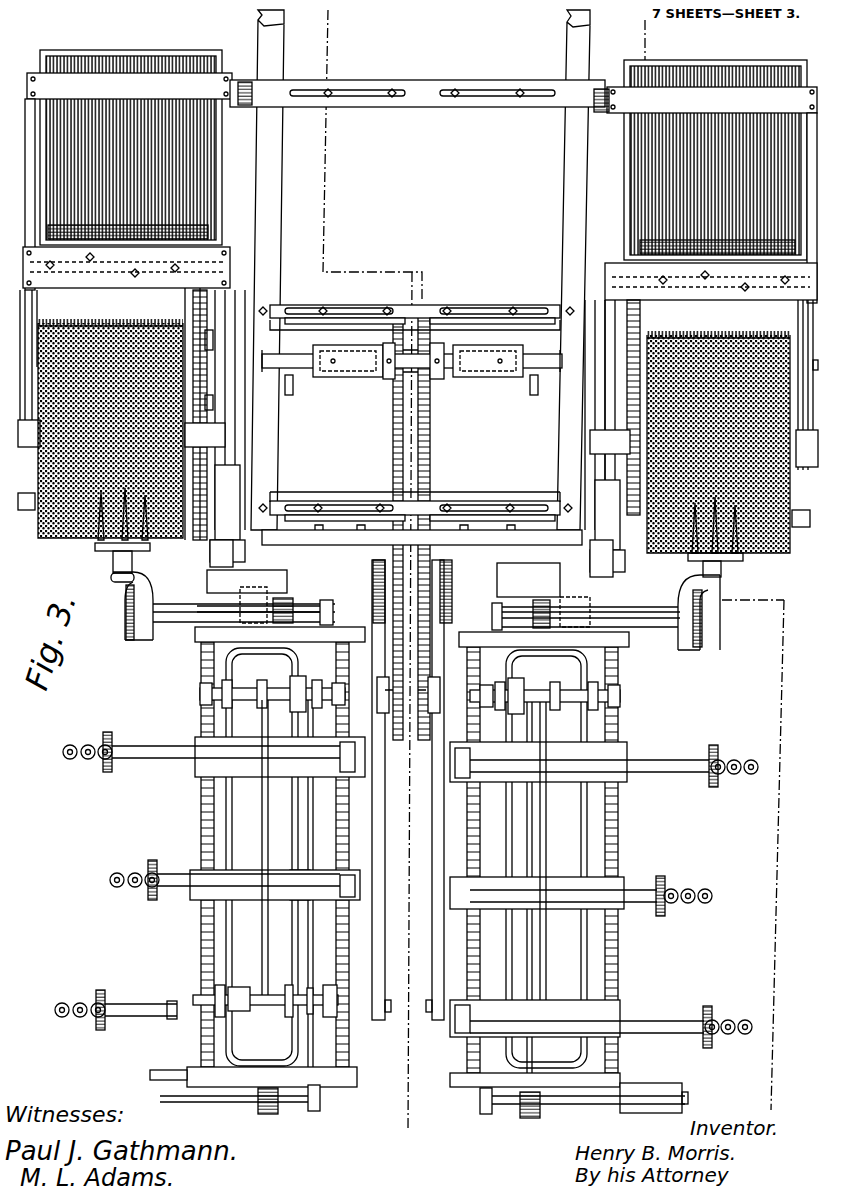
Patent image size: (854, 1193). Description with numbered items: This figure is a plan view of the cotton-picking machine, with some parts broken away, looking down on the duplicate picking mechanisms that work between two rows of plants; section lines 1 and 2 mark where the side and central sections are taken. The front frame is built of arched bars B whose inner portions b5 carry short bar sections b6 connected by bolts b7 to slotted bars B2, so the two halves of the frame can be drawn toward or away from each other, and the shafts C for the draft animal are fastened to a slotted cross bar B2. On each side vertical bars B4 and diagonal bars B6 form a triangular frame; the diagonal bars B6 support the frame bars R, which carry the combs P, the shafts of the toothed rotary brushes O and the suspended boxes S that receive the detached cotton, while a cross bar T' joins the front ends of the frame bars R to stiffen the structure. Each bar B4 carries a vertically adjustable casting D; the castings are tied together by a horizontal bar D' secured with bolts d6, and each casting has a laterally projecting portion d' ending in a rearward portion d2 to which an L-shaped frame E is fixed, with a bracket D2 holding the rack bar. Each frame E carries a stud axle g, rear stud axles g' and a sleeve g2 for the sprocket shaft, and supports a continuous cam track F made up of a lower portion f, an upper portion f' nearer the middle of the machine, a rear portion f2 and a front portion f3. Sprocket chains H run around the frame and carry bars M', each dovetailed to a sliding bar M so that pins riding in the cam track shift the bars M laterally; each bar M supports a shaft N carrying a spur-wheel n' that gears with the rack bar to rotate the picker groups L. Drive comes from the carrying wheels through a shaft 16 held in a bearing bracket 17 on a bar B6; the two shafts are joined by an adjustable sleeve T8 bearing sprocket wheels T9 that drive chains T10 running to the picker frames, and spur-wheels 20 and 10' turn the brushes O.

The boxes S is at (745, 52).
The shafts C is at (567, 158).
The top cross beam T' is at (419, 82).
The frame bars R is at (25, 470).
The combs P is at (414, 320).
The rotary drum O is at (400, 464).
The arched bars B is at (812, 560).
The slotted bars B2 is at (400, 515).
The vertical bars B4 is at (605, 560).
The diagonally arranged bars B6 is at (612, 520).
The inner portions of the frame bars b5 is at (520, 503).
The short bar sections b6 is at (265, 480).
The bolts b7 is at (380, 500).
The connecting rod T8 is at (478, 370).
The rod coupling T9 is at (440, 368).
The drive chain T10 is at (425, 742).
The rod end 16 is at (545, 360).
The bearing 17 is at (542, 350).
The bearing block 20 is at (212, 342).
The bearing block 10' is at (232, 418).
The casting D is at (390, 595).
The horizontal bar D' is at (422, 501).
The bracket D2 is at (590, 600).
The laterally projecting portion d' is at (438, 588).
The rearwardly extending portion d2 is at (411, 599).
The bolts d6 is at (478, 525).
The spur-wheel n' is at (390, 862).
The stud axle g is at (394, 691).
The stud axles g' is at (265, 1002).
The sleeve g2 is at (490, 682).
The lower portion of cam track f is at (406, 858).
The upper portion of cam track f' is at (398, 850).
The rear portion of cam track f2 is at (552, 1070).
The front portion of cam track f3 is at (395, 697).
The sprocket chains H is at (478, 930).
The hand wheel rod L is at (400, 890).
The sliding bar M is at (401, 898).
The bar M' is at (392, 929).
The shaft N is at (628, 1098).
The L-shaped frame E is at (408, 790).
The cam track F is at (405, 809).
The section line 1— 1 is at (781, 1082).
The section line 2— 2 is at (412, 1134).